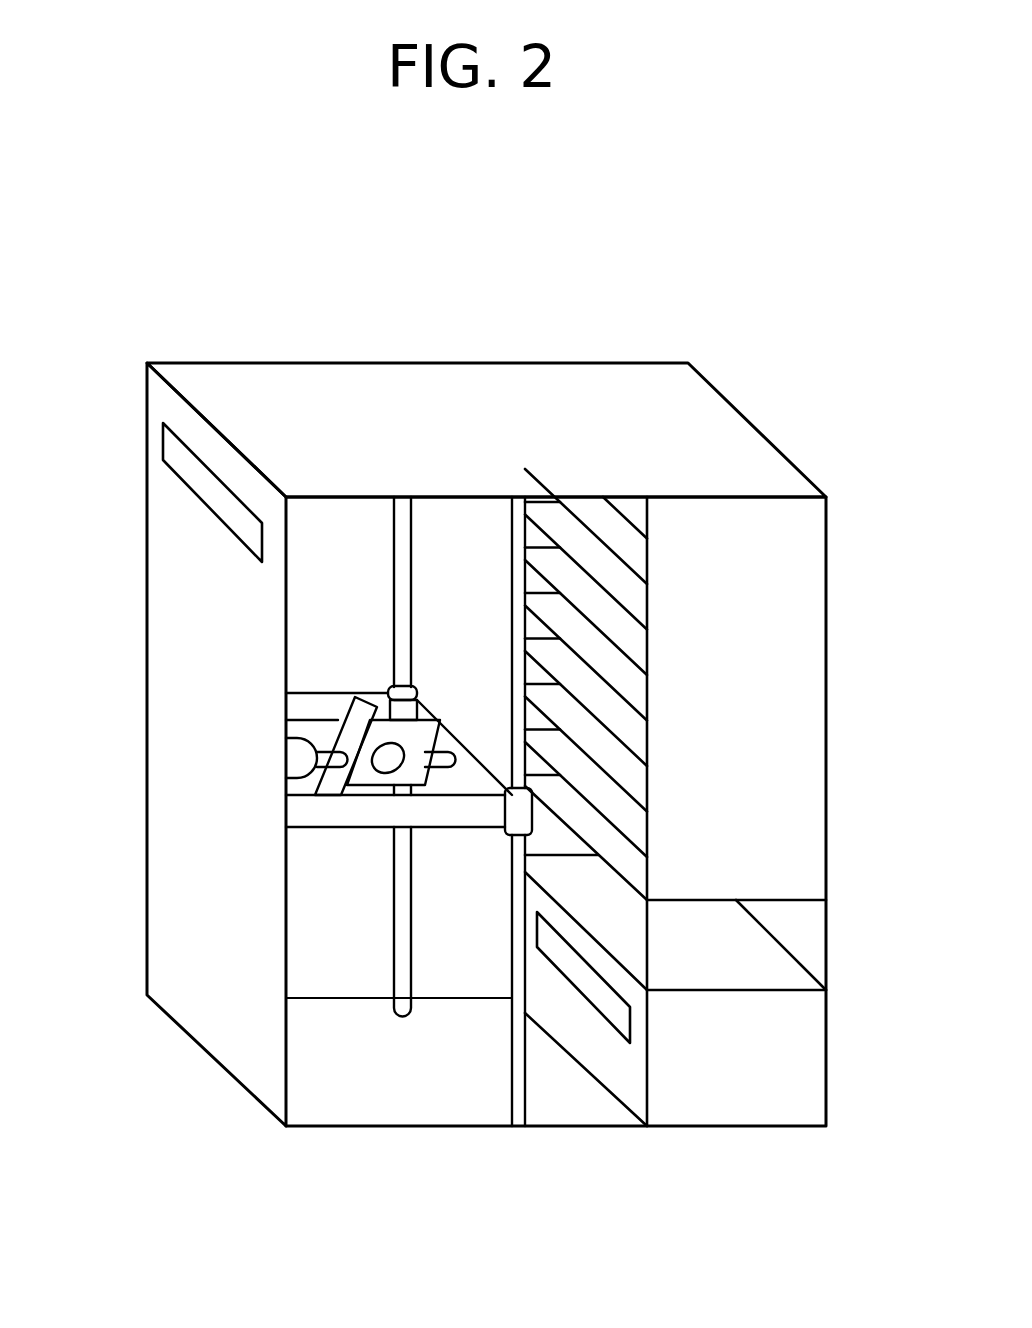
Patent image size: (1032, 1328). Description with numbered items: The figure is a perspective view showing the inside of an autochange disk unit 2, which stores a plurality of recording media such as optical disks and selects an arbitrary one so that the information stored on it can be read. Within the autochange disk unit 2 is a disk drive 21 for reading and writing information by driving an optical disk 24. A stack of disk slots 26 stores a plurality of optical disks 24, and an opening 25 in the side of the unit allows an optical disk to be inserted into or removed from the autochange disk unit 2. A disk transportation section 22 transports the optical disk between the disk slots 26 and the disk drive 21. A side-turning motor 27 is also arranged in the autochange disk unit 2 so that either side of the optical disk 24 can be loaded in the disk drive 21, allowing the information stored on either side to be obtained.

The autochange disk unit 2 is at (592, 362).
The disk drive 21 is at (727, 1108).
The disk transportation section 22 is at (488, 817).
The optical disk 24 is at (430, 707).
The opening 25 is at (237, 533).
The disk slots 26 is at (802, 812).
The side-turning motor 27 is at (300, 765).